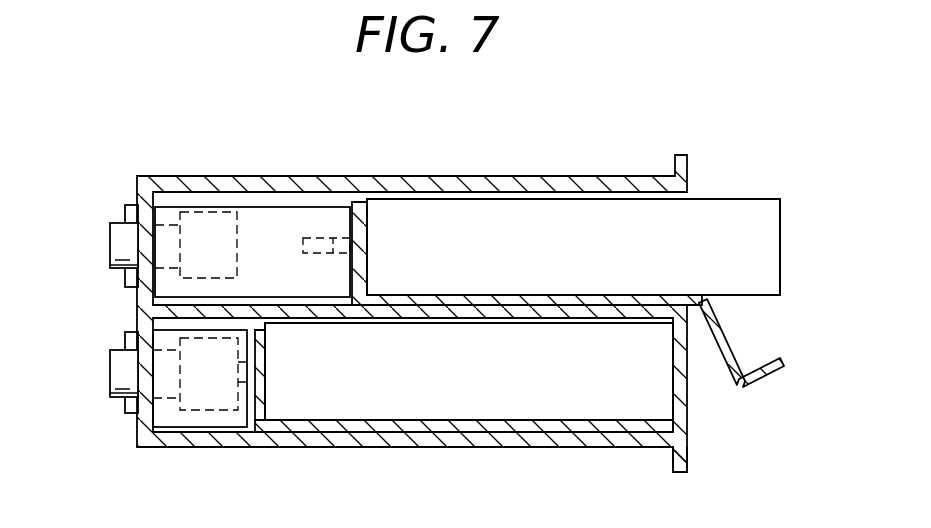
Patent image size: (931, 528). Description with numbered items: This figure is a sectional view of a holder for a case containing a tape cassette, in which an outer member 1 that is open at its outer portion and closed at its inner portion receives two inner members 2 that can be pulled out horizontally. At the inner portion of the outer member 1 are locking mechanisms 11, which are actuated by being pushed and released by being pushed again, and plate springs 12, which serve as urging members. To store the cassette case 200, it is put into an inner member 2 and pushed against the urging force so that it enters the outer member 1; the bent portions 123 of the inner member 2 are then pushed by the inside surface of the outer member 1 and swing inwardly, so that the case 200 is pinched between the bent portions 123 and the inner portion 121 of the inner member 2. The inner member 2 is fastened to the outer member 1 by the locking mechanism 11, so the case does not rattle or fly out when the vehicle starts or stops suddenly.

The outer member 1 is at (163, 446).
The locking mechanism 11 is at (110, 247).
The plate spring 12 is at (320, 215).
The inner portion 121 is at (267, 380).
The bent portion 123 is at (787, 363).
The inner member 2 is at (532, 292).
The cassette case 200 is at (737, 213).